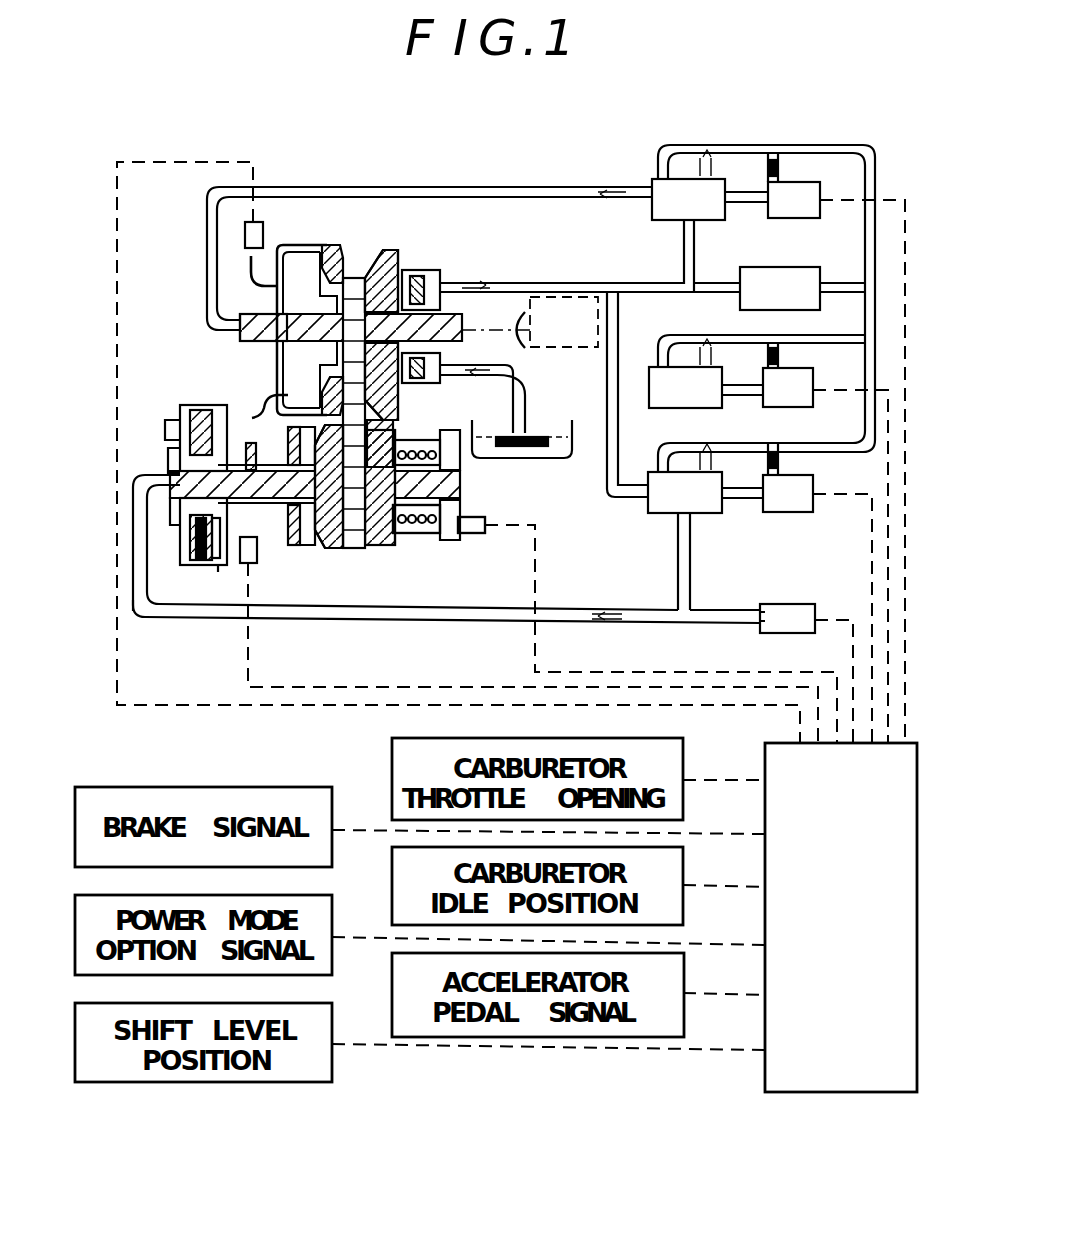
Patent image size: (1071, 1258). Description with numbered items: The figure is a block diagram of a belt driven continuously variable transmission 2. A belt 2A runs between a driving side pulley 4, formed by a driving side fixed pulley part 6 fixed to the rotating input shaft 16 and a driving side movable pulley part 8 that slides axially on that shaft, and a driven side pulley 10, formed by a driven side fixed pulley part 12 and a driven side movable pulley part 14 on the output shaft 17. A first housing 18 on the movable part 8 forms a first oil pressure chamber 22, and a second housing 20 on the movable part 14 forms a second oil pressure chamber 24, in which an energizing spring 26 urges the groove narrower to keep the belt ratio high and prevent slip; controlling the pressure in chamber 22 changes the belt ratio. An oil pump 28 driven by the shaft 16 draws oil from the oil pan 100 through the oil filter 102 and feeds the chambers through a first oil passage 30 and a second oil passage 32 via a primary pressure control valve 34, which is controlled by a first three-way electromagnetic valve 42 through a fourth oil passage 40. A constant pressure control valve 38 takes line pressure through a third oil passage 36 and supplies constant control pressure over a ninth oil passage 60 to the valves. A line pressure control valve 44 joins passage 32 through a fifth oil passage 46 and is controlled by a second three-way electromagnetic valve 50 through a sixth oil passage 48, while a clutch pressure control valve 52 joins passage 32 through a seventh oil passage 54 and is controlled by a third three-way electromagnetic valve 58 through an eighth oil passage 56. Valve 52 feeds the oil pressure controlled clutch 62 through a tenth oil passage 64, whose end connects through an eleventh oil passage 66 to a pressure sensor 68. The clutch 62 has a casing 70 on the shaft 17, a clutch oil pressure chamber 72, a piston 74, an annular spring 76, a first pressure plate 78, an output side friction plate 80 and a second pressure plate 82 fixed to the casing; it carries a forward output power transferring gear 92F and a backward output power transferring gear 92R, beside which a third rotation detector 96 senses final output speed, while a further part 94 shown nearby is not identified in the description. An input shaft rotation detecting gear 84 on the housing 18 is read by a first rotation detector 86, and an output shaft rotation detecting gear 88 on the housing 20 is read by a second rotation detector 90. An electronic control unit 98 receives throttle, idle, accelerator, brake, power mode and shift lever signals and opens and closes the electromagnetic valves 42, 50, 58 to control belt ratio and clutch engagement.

The continuously variable transmission 2 is at (829, 118).
The belt 2A is at (356, 283).
The driving side pulley 4 is at (396, 215).
The driving side fixed pulley part 6 is at (396, 268).
The driving side movable pulley part 8 is at (356, 278).
The driven side pulley 10 is at (538, 557).
The driven side fixed pulley part 12 is at (367, 535).
The driven side movable pulley part 14 is at (377, 550).
The input shaft 16 is at (455, 340).
The output shaft 17 is at (318, 548).
The first housing 18 is at (285, 250).
The second housing 20 is at (427, 432).
The first oil pressure chamber 22 is at (282, 345).
The second oil pressure chamber 24 is at (420, 540).
The energizing spring 26 is at (450, 537).
The oil pump 28 is at (438, 270).
The first oil passage 30 is at (562, 187).
The second oil passage 32 is at (612, 283).
The primary pressure control valve 34 is at (688, 199).
The third oil passage 36 is at (700, 292).
The constant pressure control valve 38 is at (780, 288).
The fourth oil passage 40 is at (750, 205).
The first three-way electromagnetic valve 42 is at (794, 200).
The line pressure control valve 44 is at (685, 387).
The fifth oil passage 46 is at (655, 395).
The sixth oil passage 48 is at (748, 395).
The second three-way electromagnetic valve 50 is at (788, 387).
The clutch pressure control valve 52 is at (685, 492).
The seventh oil passage 54 is at (627, 500).
The eighth oil passage 56 is at (746, 498).
The third three-way electromagnetic valve 58 is at (788, 493).
The ninth oil passage 60 is at (872, 145).
The oil pressure controlled clutch 62 is at (180, 400).
The tenth oil passage 64 is at (488, 610).
The eleventh oil passage 66 is at (717, 611).
The pressure sensor 68 is at (790, 604).
The casing 70 is at (180, 418).
The clutch oil pressure chamber 72 is at (176, 462).
The piston 74 is at (174, 517).
The annular spring 76 is at (182, 530).
The first pressure plate 78 is at (187, 560).
The friction plate 80 is at (146, 616).
The second pressure plate 82 is at (196, 572).
The input shaft rotation detecting gear 84 is at (250, 275).
The first rotation detector 86 is at (256, 221).
The output shaft rotation detecting gear 88 is at (452, 433).
The second rotation detector 90 is at (487, 519).
The backward output power transferring gear 92R is at (252, 442).
The forward output power transferring gear 92F is at (293, 548).
The sensor 94 is at (266, 598).
The third rotation detector 96 is at (224, 568).
The electronic control unit 98 is at (838, 1093).
The oil pan 100 is at (540, 457).
The oil filter 102 is at (530, 437).